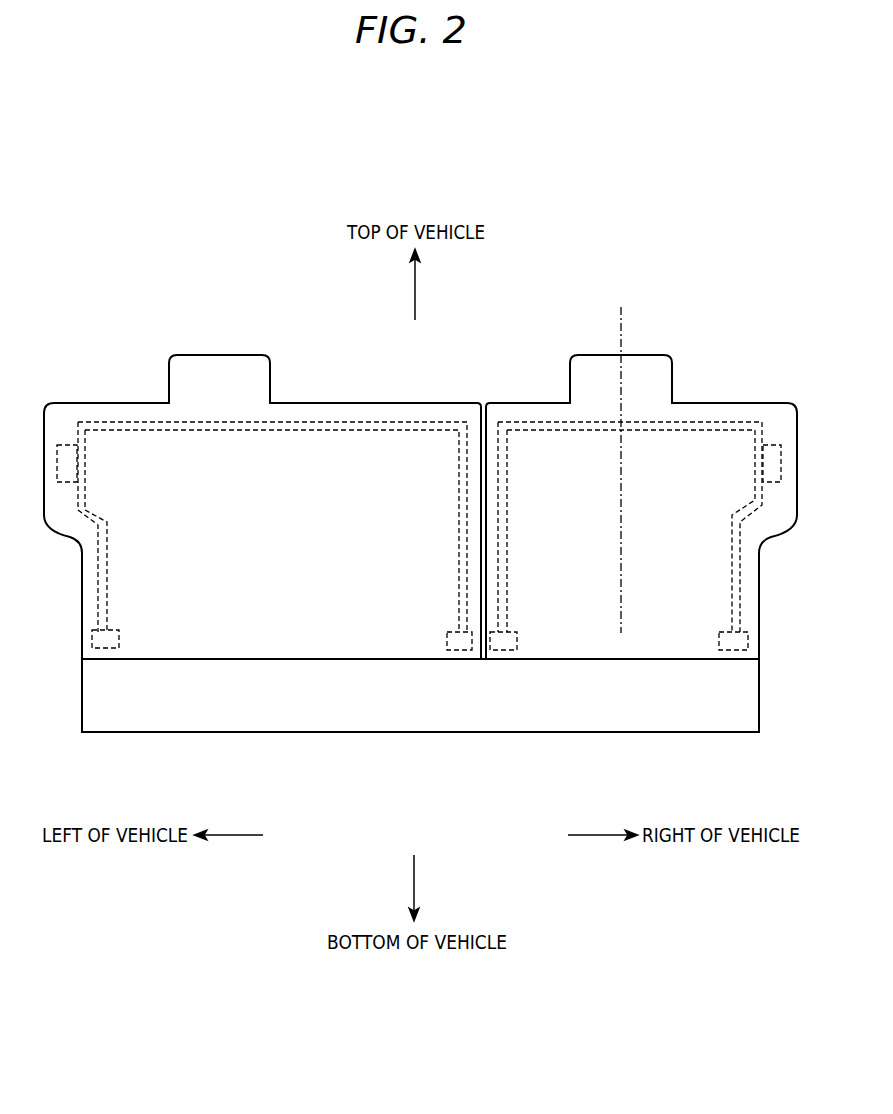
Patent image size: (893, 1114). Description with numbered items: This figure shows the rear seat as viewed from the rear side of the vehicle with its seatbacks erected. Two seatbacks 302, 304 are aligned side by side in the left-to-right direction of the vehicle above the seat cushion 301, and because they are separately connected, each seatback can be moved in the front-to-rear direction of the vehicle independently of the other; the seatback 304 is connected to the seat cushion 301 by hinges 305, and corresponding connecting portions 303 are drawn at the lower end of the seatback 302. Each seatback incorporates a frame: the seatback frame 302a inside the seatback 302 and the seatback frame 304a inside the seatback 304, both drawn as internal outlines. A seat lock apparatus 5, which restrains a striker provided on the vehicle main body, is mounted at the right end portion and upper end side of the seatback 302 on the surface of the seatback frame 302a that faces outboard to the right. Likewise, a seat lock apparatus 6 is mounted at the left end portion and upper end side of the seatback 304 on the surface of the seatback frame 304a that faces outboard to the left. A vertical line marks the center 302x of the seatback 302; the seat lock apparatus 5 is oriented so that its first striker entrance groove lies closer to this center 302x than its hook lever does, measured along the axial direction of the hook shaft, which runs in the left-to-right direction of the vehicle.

The seat cushion 301 is at (267, 716).
The seatback 302 is at (528, 403).
The seatback frame 302a is at (718, 418).
The center of the seatback 302x is at (622, 327).
The fixing portions of right battery module 303 is at (509, 652).
The seatback 304 is at (408, 403).
The seatback frame 304a is at (323, 418).
The hinges 305 is at (112, 650).
The seat lock apparatus 5 is at (772, 443).
The seat lock apparatus 6 is at (72, 438).